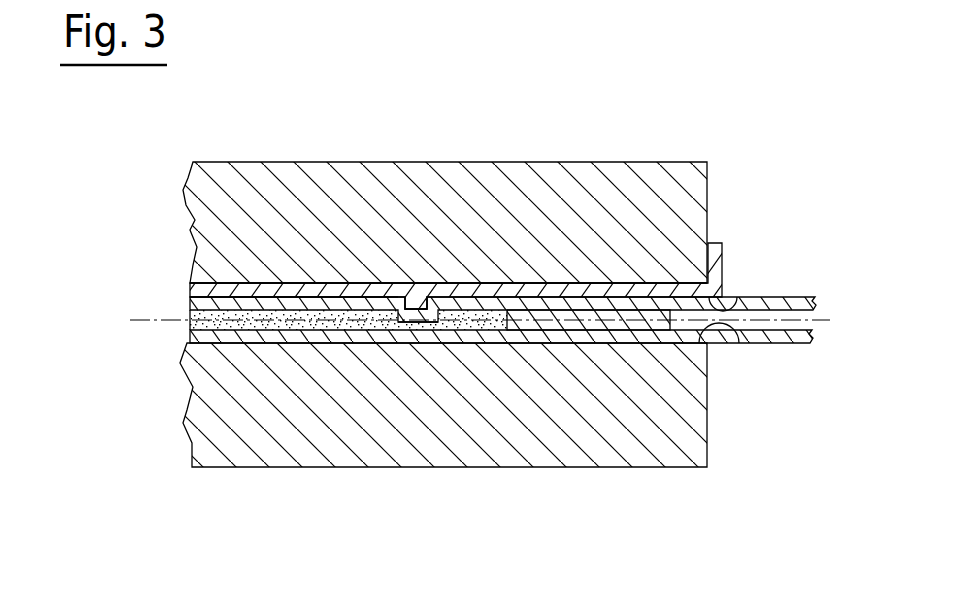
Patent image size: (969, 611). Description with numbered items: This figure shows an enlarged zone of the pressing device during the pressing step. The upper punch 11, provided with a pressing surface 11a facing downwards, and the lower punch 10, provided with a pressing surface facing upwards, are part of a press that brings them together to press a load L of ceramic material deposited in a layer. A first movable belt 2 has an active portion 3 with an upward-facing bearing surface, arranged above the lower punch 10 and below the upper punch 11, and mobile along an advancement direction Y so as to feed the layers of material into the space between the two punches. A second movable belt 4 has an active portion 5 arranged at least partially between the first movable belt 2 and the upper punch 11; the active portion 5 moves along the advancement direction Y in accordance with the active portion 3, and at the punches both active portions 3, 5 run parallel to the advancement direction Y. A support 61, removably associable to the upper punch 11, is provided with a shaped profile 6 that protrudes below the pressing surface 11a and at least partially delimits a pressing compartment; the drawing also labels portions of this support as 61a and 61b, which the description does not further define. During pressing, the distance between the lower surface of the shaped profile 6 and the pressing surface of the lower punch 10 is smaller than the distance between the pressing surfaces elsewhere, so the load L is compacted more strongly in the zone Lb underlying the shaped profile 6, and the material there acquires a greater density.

The upper punch 11 is at (468, 145).
The pressing surface 11a is at (197, 297).
The lower punch 10 is at (483, 483).
The shaped profile 6 is at (407, 319).
The support 61 is at (709, 243).
The pressing portion of holding member 61a is at (188, 312).
The curved portion 61b is at (727, 302).
The second movable belt 4 is at (790, 288).
The first movable belt 2 is at (792, 345).
The active portion 5 is at (783, 311).
The active portion 3 is at (722, 343).
The load L is at (192, 322).
The zone Lb is at (407, 330).
The advancement direction Y is at (856, 313).